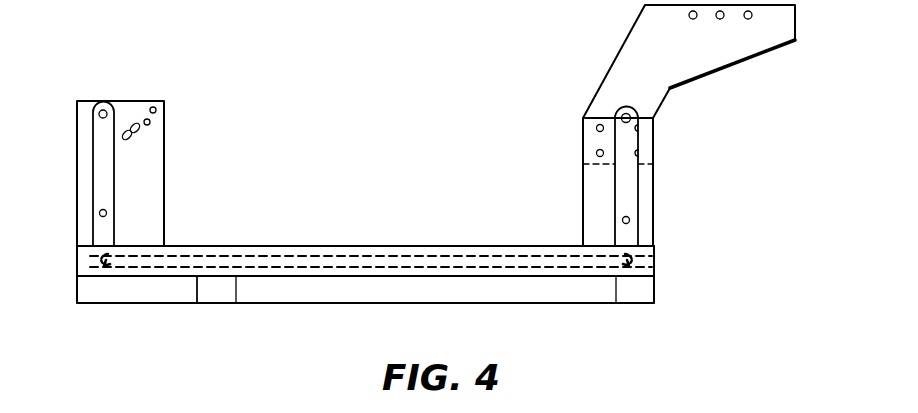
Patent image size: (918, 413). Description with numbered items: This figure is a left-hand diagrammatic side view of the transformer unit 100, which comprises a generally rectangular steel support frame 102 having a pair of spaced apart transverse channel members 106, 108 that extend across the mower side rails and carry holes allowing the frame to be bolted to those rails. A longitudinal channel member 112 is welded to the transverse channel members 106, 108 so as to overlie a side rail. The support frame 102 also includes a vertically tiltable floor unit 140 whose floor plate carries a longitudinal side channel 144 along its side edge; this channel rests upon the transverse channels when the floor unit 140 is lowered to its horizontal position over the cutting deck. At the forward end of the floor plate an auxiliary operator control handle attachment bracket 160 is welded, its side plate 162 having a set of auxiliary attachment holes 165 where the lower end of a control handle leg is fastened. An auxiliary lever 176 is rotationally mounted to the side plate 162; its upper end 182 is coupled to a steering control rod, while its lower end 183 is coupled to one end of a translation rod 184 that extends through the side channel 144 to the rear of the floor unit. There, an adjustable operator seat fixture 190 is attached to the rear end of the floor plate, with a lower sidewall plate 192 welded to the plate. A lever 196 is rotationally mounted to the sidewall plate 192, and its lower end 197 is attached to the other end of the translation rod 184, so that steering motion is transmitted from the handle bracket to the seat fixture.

The transformer unit 100 is at (436, 97).
The support frame 102 is at (664, 294).
The transverse channel member 106 is at (213, 288).
The transverse channel member 108 is at (628, 293).
The longitudinal channel member 112 is at (122, 293).
The floor unit 140 is at (449, 238).
The longitudinal side channel 144 is at (365, 246).
The auxiliary operator control handle attachment bracket 160 is at (144, 132).
The side plate 162 is at (150, 183).
The auxiliary attachment holes 165 is at (152, 107).
The auxiliary lever 176 is at (100, 155).
The upper end of lever 182 is at (97, 100).
The lower end of lever 183 is at (100, 258).
The translation rod 184 is at (280, 246).
The adjustable operator seat fixture 190 is at (716, 75).
The lower sidewall plate 192 is at (648, 140).
The lever 196 is at (647, 177).
The lower end of lever 197 is at (655, 258).